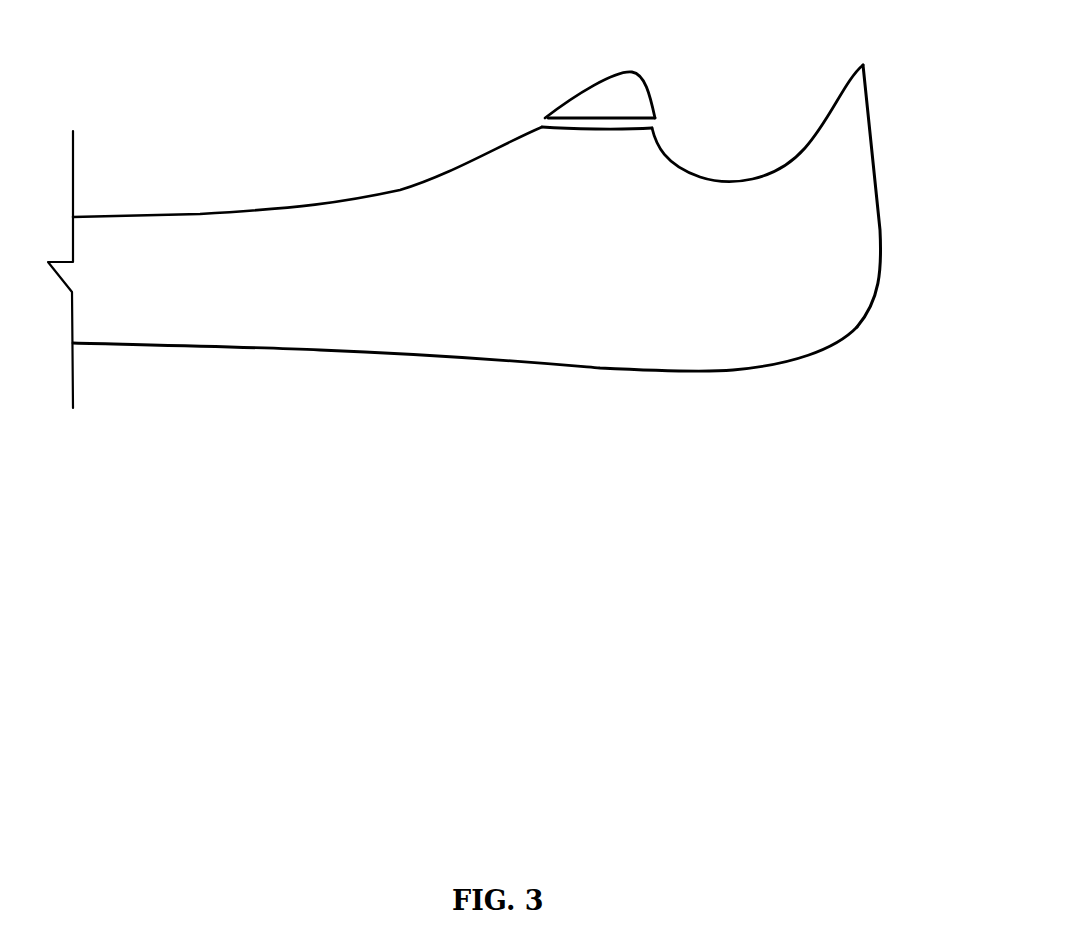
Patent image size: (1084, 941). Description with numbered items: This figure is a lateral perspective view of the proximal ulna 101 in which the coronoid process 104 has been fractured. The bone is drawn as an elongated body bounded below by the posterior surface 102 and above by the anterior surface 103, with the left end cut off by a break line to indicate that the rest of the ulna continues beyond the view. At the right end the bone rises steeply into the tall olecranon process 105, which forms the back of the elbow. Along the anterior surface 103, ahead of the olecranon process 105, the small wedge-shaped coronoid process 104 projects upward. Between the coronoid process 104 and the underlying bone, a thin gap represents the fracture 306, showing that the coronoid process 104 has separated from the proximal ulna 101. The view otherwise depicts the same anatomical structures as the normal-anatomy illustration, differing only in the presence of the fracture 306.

The proximal ulna 101 is at (591, 179).
The posterior surface 102 is at (500, 358).
The anterior surface 103 is at (310, 206).
The coronoid process 104 is at (608, 92).
The olecranon process 105 is at (868, 78).
The fracture 306 is at (542, 121).